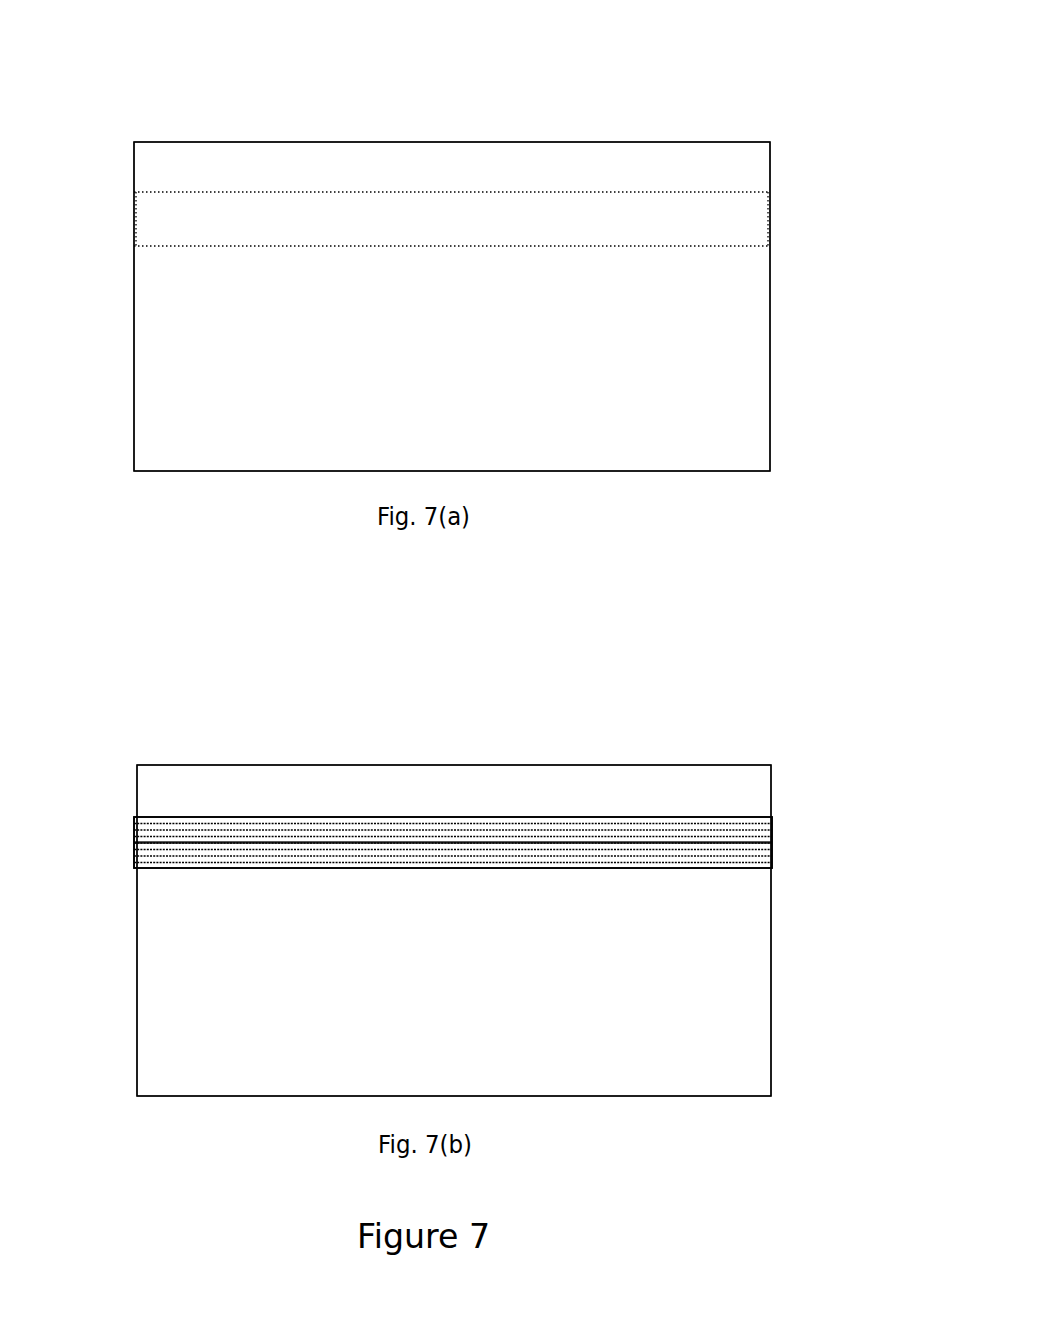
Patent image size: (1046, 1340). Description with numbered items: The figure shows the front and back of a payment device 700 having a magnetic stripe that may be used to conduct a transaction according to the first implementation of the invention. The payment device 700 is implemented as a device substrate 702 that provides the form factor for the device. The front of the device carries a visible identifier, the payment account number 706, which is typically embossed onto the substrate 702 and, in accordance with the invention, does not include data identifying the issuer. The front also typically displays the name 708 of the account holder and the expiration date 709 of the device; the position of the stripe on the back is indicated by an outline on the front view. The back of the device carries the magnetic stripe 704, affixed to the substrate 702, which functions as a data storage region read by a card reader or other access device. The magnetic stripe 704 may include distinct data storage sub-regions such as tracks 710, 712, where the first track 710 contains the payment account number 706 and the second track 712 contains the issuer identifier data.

In FIG. 7A, the payment device 700 is at (450, 107).
In FIG. 7B, the payment device 700 is at (452, 730).
In FIG. 7A, the device substrate 702 is at (246, 141).
In FIG. 7B, the device substrate 702 is at (248, 764).
In FIG. 7A, the magnetic stripe 704 is at (558, 193).
In FIG. 7B, the magnetic stripe 704 is at (561, 815).
In FIG. 7A, the payment account number 706 is at (630, 307).
In FIG. 7A, the name 708 is at (217, 385).
In FIG. 7A, the expiration date 709 is at (630, 386).
In FIG. 7B, the track 710 is at (773, 836).
In FIG. 7B, the track 712 is at (773, 870).